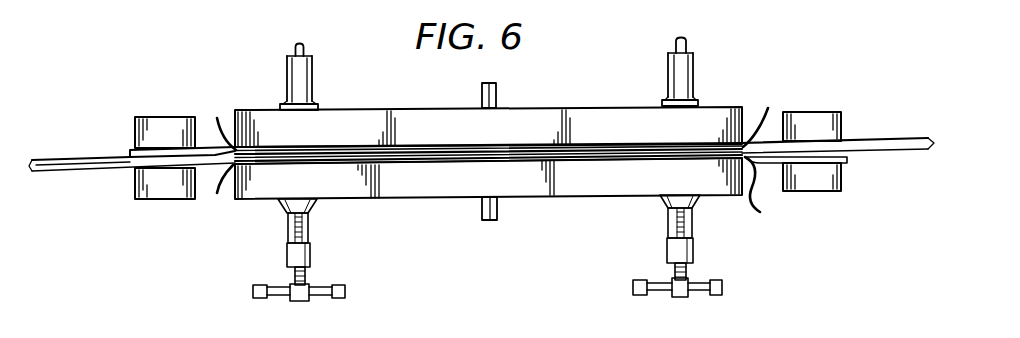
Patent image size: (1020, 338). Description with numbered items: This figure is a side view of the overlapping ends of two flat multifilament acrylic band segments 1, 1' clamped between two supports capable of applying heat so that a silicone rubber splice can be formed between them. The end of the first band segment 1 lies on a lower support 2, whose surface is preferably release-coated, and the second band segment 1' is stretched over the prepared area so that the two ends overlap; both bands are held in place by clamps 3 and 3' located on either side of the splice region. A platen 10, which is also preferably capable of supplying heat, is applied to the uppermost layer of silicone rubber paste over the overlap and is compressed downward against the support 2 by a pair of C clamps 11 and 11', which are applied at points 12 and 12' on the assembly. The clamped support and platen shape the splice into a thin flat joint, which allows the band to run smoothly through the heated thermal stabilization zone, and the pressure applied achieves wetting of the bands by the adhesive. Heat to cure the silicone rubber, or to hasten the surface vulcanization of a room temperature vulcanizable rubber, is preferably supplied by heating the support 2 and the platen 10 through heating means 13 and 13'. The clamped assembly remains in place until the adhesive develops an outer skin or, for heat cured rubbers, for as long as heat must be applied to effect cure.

The band segment 1 is at (132, 180).
The second band segment 1' is at (838, 113).
The support 2 is at (595, 183).
The clamp 3 is at (153, 181).
The clamp 3' is at (822, 169).
The platen 10 is at (548, 118).
The C clamp 11 is at (708, 69).
The C clamp 11' is at (273, 64).
The clamping point 12 is at (321, 79).
The clamping point 12' is at (652, 78).
The heating means 13 is at (460, 87).
The heating means 13' is at (512, 212).